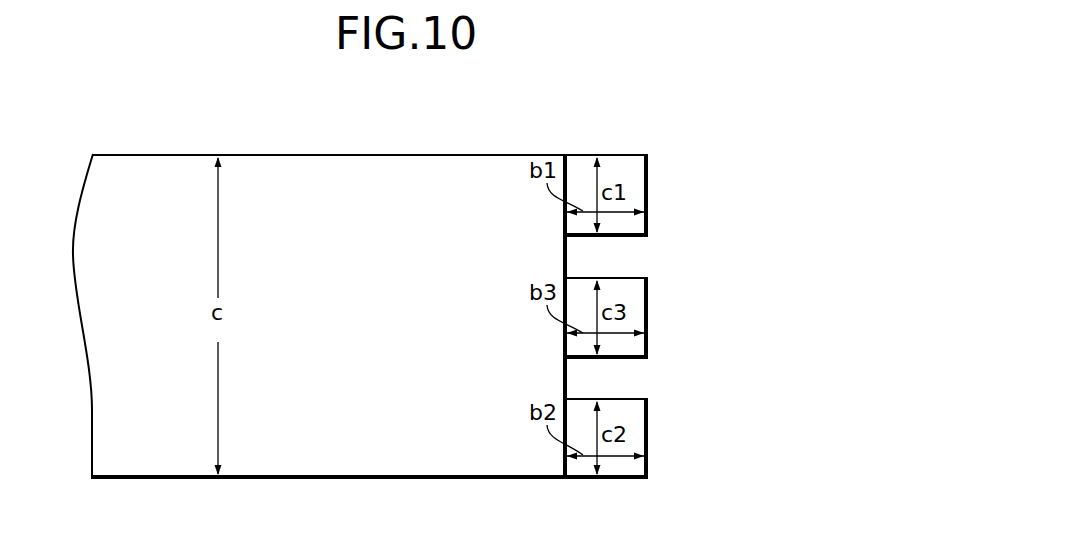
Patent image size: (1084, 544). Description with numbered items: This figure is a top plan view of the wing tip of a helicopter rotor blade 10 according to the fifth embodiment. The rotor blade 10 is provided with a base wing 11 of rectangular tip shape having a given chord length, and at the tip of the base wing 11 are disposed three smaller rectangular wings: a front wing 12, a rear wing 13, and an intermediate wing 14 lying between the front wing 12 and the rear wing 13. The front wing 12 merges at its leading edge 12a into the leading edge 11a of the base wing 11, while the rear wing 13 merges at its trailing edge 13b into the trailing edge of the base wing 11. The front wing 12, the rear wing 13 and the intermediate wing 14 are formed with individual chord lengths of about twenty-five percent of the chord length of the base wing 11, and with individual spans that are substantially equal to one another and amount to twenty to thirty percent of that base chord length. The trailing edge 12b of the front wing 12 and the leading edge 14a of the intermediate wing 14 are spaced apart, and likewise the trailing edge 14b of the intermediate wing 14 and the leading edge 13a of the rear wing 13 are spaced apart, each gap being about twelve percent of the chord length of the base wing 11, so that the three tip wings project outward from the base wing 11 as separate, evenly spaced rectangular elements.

The rotor blade 10 is at (283, 112).
The base wing 11 is at (421, 166).
The leading edge of the base wing 11a is at (497, 155).
The front wing 12 is at (642, 197).
The leading edge of the front wing 12a is at (620, 154).
The trailing edge of the front wing 12b is at (633, 237).
The rear wing 13 is at (642, 440).
The leading edge of the rear wing 13a is at (633, 399).
The trailing edge of the rear wing 13b is at (633, 478).
The intermediate wing 14 is at (642, 320).
The leading edge of the intermediate wing 14a is at (633, 278).
The trailing edge of the intermediate wing 14b is at (633, 358).